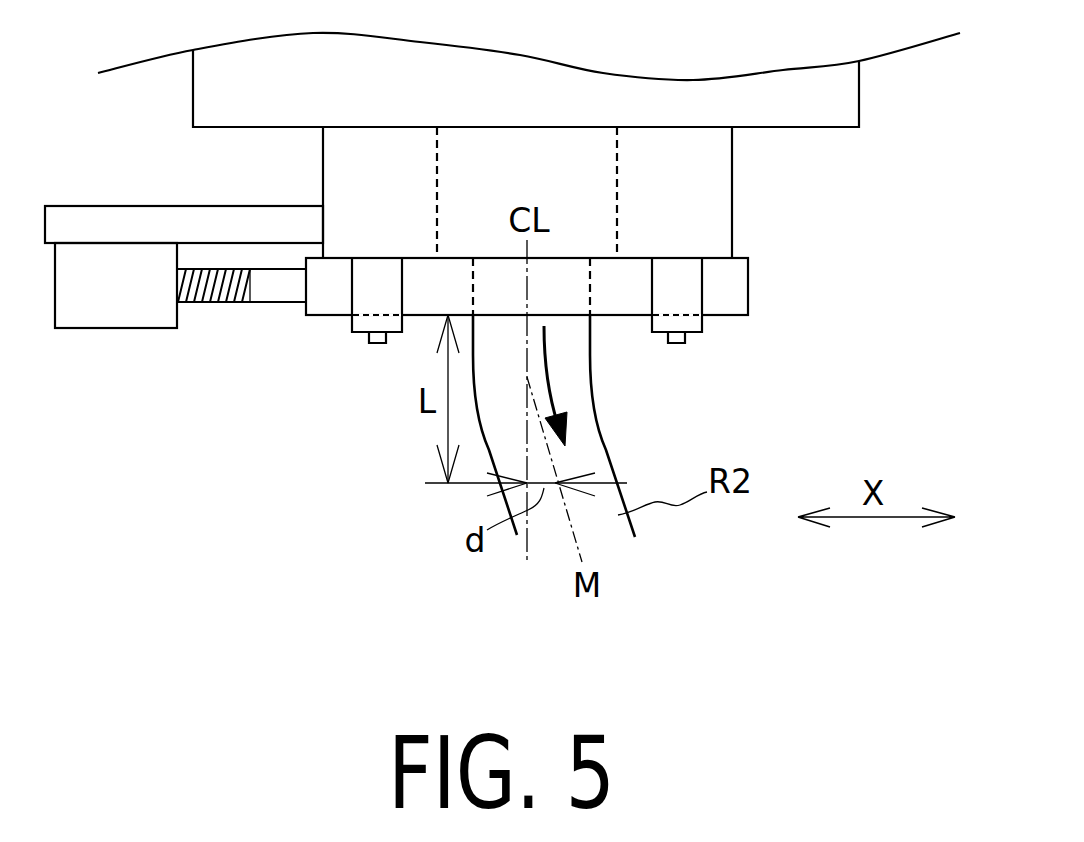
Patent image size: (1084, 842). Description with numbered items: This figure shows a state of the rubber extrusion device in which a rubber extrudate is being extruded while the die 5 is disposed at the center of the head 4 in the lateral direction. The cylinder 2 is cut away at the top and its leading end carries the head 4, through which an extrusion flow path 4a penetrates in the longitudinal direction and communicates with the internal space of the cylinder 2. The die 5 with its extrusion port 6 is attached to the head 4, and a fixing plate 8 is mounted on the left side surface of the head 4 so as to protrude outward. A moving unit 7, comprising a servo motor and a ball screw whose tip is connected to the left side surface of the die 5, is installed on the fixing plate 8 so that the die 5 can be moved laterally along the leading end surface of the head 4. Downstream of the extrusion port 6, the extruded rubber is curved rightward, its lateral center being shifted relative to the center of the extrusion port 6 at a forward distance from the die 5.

The cylinder 2 is at (210, 95).
The head 4 is at (720, 180).
The extrusion flow path 4a is at (433, 153).
The die 5 is at (607, 312).
The extrusion port 6 is at (473, 279).
The moving unit 7 is at (209, 316).
The fixing plate 8 is at (232, 215).